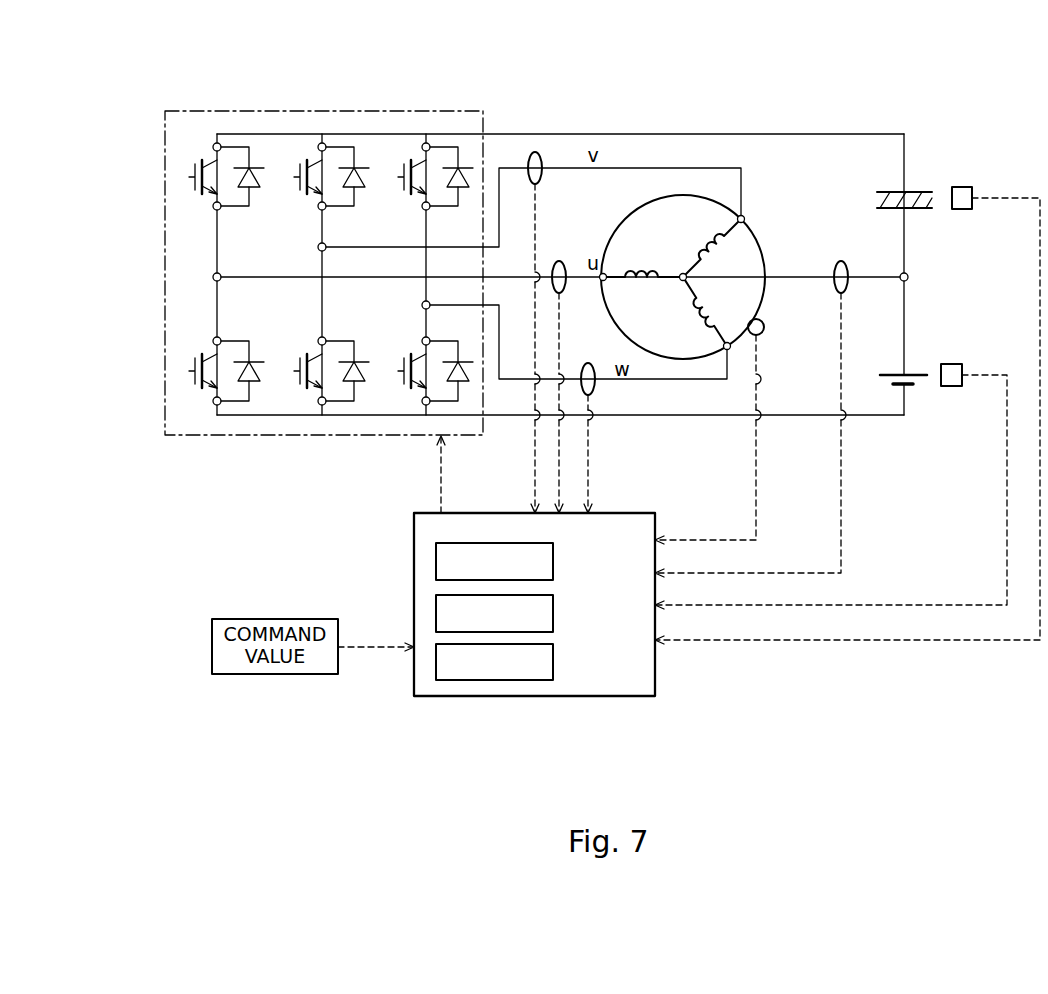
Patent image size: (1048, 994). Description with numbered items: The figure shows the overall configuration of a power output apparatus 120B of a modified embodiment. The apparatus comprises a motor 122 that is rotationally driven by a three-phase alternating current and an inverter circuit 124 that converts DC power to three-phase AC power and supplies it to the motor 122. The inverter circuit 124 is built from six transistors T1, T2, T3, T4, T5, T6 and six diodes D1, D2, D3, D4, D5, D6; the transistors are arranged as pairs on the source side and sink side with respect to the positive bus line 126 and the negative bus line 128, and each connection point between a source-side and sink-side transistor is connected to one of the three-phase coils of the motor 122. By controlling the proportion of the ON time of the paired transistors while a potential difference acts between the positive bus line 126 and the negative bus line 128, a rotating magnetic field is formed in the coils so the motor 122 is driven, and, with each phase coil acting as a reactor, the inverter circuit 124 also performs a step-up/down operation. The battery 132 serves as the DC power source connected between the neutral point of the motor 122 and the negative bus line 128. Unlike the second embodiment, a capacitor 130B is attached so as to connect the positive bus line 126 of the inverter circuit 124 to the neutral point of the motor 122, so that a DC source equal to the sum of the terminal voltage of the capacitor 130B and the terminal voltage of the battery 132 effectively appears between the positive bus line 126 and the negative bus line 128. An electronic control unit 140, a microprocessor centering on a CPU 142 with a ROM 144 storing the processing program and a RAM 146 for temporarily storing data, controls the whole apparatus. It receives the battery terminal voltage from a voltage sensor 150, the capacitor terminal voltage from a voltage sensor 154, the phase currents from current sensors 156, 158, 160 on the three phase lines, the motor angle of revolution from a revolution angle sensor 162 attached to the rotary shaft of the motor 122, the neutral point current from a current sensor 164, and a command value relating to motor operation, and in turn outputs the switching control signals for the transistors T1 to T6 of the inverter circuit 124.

The power output apparatus 120B is at (878, 100).
The motor 122 is at (744, 221).
The inverter circuit 124 is at (375, 110).
The positive bus line 126 is at (715, 134).
The negative bus line 128 is at (665, 415).
The capacitor 130B is at (880, 192).
The battery 132 is at (886, 374).
The electronic control unit 140 is at (534, 632).
The CPU 142 is at (556, 561).
The ROM 144 is at (556, 611).
The RAM 146 is at (556, 661).
The voltage sensor 150 is at (948, 363).
The voltage sensor 154 is at (959, 186).
The current sensor 156 is at (558, 260).
The current sensor 158 is at (535, 151).
The current sensor 160 is at (588, 363).
The revolution angle sensor 162 is at (760, 320).
The current sensor 164 is at (837, 260).
The transistor T1 is at (188, 197).
The transistor T2 is at (192, 349).
The transistor T3 is at (293, 197).
The transistor T4 is at (297, 349).
The transistor T5 is at (398, 197).
The transistor T6 is at (402, 349).
The diode D1 is at (256, 193).
The diode D2 is at (253, 347).
The diode D3 is at (361, 193).
The diode D4 is at (358, 347).
The diode D5 is at (465, 193).
The diode D6 is at (463, 347).